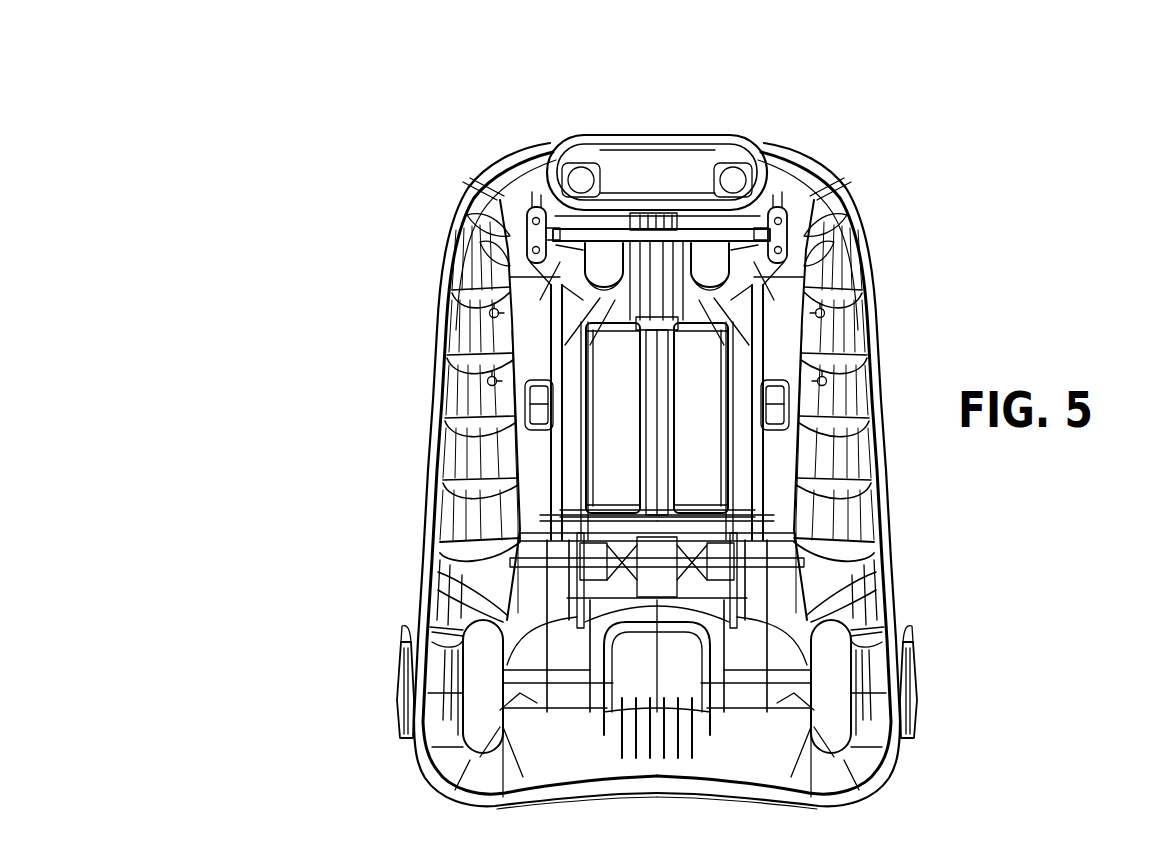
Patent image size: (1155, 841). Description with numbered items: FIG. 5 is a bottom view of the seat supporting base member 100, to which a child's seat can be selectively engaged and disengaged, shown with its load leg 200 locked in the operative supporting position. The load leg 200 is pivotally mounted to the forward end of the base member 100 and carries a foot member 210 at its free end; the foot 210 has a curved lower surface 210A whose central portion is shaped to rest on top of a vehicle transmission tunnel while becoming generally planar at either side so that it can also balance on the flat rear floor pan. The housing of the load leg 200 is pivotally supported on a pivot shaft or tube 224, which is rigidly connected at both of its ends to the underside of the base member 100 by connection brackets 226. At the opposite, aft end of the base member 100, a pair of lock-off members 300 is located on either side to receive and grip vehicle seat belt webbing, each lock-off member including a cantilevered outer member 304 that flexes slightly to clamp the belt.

The seat supporting base member 100 is at (920, 492).
The load leg 200 is at (676, 110).
The foot member 210 is at (627, 137).
The curved lower surface 210A is at (617, 183).
The pivot shaft or tube 224 is at (557, 310).
The connection brackets 226 is at (515, 237).
The lock-off members 300 is at (370, 673).
The outer member 304 is at (403, 637).